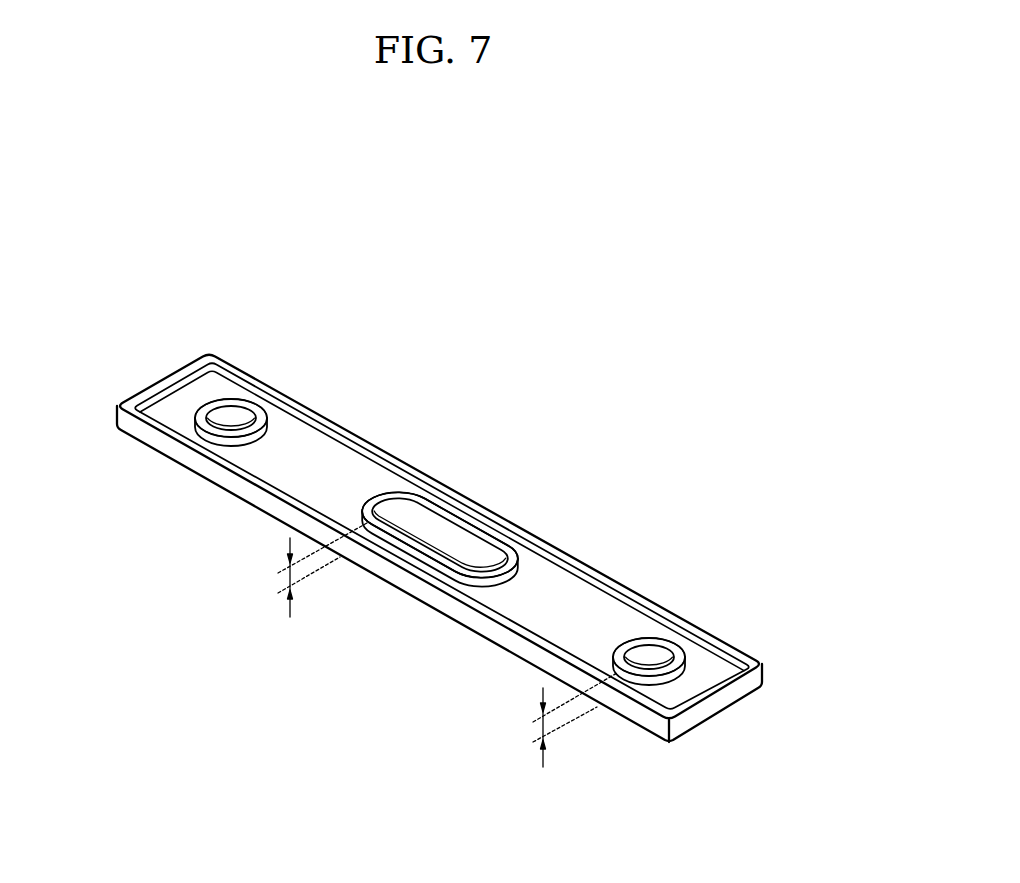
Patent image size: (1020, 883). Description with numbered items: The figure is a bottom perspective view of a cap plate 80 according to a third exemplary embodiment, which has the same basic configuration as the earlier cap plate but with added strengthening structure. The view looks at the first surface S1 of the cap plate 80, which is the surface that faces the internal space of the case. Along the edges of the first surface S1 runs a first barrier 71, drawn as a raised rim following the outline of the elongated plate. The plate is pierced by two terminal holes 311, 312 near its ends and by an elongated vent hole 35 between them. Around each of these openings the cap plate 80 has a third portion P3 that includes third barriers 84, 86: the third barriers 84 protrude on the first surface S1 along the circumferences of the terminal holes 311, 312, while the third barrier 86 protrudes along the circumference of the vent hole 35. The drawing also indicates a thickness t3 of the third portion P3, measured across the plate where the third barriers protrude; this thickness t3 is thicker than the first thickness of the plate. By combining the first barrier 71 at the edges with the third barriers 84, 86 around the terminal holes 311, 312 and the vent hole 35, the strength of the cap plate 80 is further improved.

The first barrier 71 is at (338, 422).
The first surface S1 is at (567, 600).
The third barrier 84 is at (257, 410).
The terminal hole 311 is at (223, 412).
The terminal hole 312 is at (642, 654).
The third portion P3 is at (248, 400).
The third barrier 86 is at (500, 547).
The vent hole 35 is at (418, 517).
The cap plate 80 is at (472, 472).
The thickness of the third portion t3 is at (436, 645).